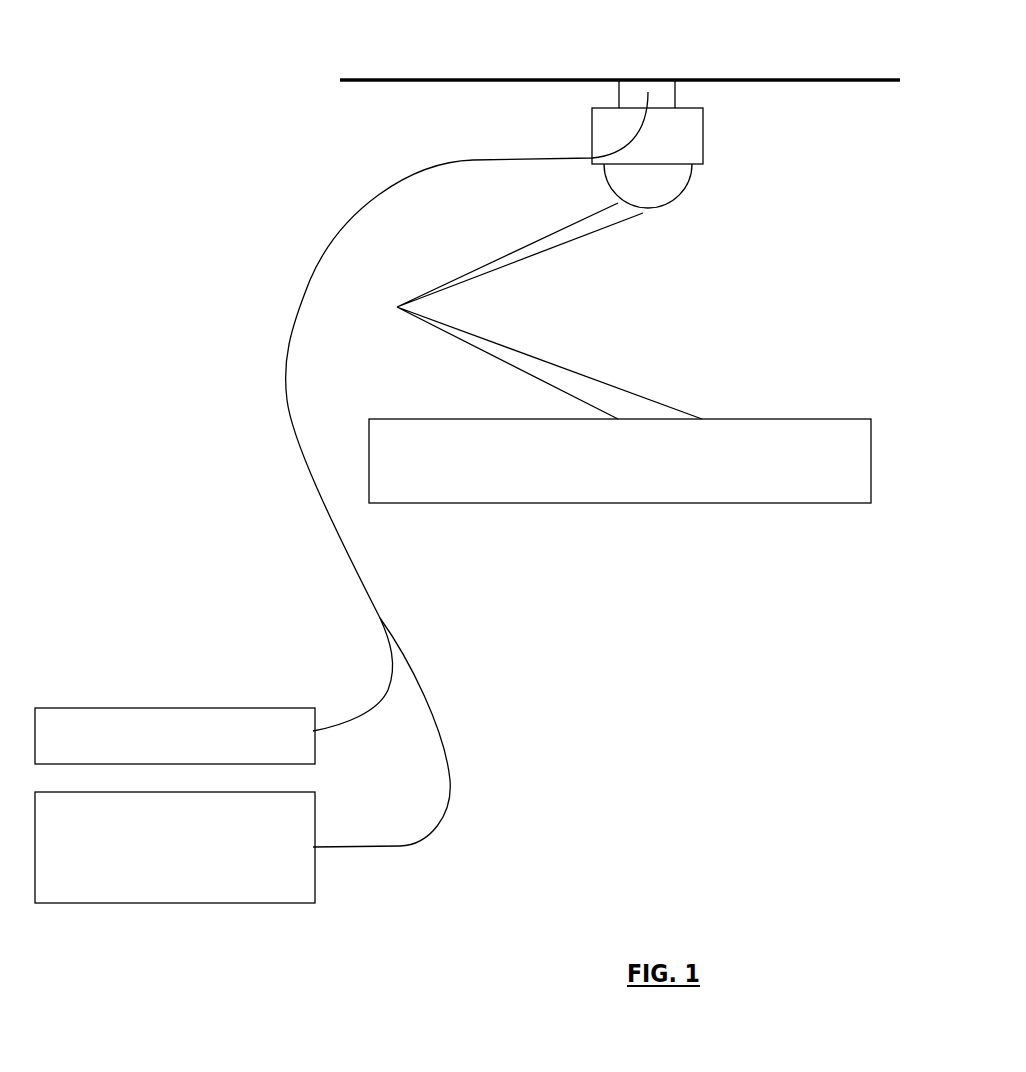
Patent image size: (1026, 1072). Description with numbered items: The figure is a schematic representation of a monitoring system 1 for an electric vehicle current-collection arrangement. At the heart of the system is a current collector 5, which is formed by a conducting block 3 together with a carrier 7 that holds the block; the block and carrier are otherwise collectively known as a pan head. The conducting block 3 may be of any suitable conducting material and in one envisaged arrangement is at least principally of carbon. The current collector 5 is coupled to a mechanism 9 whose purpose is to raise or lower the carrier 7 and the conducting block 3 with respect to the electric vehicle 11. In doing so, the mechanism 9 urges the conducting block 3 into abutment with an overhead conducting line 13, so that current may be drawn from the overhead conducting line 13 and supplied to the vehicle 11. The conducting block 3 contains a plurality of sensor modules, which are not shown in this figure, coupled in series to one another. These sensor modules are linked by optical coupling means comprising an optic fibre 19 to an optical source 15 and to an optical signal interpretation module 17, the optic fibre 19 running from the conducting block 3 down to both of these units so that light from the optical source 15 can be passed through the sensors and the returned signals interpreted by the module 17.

The monitoring system 1 is at (207, 200).
The conducting block 3 is at (672, 96).
The current collector 5 is at (785, 130).
The carrier 7 is at (690, 147).
The mechanism 9 is at (537, 247).
The electric vehicle 11 is at (713, 475).
The overhead conducting line 13 is at (388, 80).
The optical source 15 is at (163, 708).
The optical signal interpretation module 17 is at (260, 900).
The optic fibre 19 is at (305, 470).